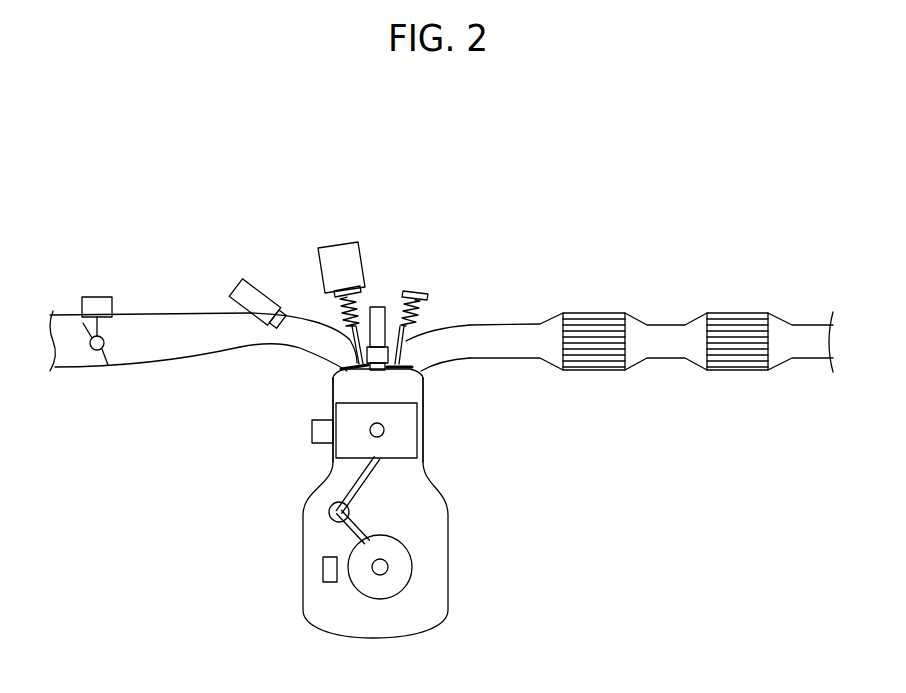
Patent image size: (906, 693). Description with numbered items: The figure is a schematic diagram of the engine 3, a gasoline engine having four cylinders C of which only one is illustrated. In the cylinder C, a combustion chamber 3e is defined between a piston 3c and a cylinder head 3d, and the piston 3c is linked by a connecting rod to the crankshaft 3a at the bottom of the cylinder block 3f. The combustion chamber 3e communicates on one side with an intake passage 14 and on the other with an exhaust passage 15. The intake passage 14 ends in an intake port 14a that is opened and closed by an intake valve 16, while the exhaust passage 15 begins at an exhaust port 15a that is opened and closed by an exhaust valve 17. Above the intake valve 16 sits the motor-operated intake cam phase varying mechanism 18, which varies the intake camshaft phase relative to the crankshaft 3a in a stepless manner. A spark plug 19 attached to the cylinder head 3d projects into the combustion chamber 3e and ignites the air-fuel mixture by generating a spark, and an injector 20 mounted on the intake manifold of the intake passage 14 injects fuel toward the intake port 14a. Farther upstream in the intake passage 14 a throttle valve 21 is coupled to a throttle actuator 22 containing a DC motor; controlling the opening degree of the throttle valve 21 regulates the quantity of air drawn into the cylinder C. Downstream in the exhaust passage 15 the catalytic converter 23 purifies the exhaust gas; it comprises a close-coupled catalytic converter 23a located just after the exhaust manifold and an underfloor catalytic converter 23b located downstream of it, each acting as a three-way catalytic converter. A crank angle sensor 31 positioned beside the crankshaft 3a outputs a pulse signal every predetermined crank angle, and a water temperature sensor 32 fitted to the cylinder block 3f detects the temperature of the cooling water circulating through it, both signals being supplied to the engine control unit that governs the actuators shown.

The engine 3 is at (513, 240).
The crankshaft 3a is at (410, 587).
The piston 3c is at (407, 460).
The cylinder head 3d is at (423, 376).
The combustion chamber 3e is at (345, 389).
The cylinder block 3f is at (325, 453).
The cylinder C is at (420, 432).
The intake passage 14 is at (147, 313).
The intake port 14a is at (305, 348).
The exhaust passage 15 is at (497, 323).
The exhaust port 15a is at (440, 362).
The intake valve 16 is at (340, 343).
The exhaust valve 17 is at (418, 348).
The intake cam phase varying mechanism 18 is at (340, 244).
The spark plug 19 is at (377, 306).
The injector 20 is at (240, 284).
The throttle valve 21 is at (98, 368).
The throttle actuator 22 is at (96, 297).
The catalytic converter 23 is at (665, 295).
The close-coupled catalytic converter 23a is at (613, 312).
The underfloor catalytic converter 23b is at (723, 311).
The crank angle sensor 31 is at (322, 567).
The water temperature sensor 32 is at (311, 431).